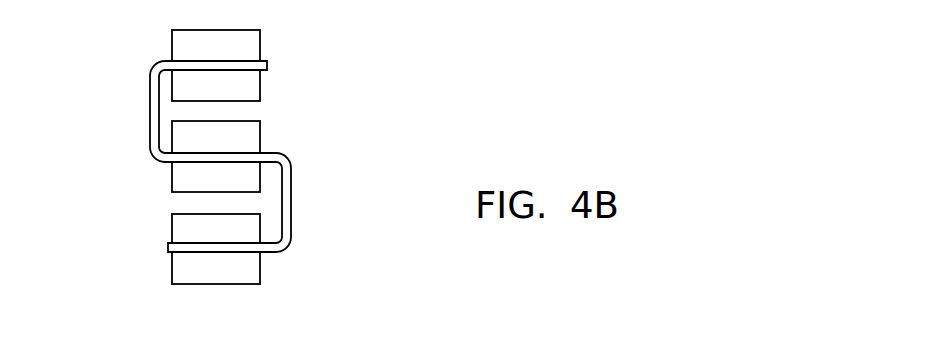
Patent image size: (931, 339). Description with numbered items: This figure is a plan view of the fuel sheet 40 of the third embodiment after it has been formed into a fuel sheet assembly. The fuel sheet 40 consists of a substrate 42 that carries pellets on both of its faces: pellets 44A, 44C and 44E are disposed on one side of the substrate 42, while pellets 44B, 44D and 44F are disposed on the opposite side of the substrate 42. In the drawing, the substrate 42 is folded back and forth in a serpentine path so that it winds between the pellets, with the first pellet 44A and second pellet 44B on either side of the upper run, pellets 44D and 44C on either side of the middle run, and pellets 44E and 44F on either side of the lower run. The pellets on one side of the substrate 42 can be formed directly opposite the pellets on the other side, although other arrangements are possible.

The fuel sheet 40 is at (200, 171).
The substrate 42 is at (155, 108).
The pellet 44A is at (248, 50).
The pellet 44B is at (248, 93).
The pellet 44C is at (183, 172).
The pellet 44D is at (248, 141).
The pellet 44E is at (183, 227).
The pellet 44F is at (192, 275).